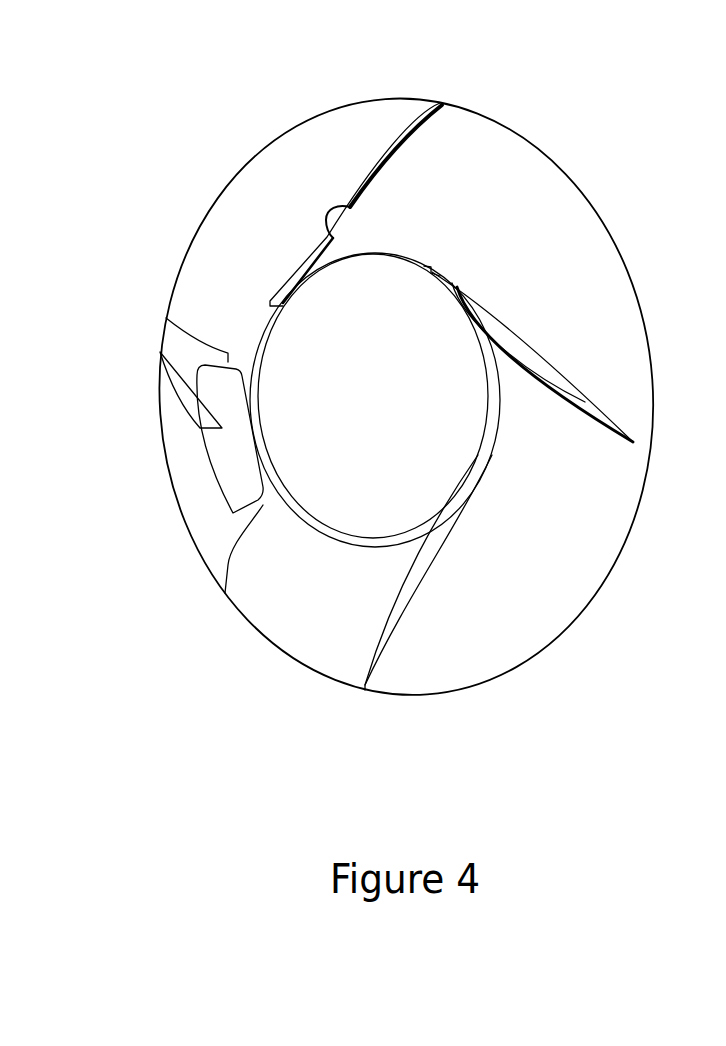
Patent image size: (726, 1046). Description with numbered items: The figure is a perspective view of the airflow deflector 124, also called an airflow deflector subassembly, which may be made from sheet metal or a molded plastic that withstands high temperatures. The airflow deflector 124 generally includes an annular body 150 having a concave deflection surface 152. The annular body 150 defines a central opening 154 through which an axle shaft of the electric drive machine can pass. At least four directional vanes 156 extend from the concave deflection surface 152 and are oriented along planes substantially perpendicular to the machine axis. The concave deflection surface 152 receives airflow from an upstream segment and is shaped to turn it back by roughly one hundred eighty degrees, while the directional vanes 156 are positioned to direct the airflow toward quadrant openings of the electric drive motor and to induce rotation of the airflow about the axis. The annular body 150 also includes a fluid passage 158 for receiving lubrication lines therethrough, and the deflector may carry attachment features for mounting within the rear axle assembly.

The airflow deflector 124 is at (582, 80).
The annular body 150 is at (547, 255).
The concave deflection surface 152 is at (478, 175).
The central opening 154 is at (292, 345).
The directional vanes 156 is at (386, 140).
The fluid passage 158 is at (238, 490).